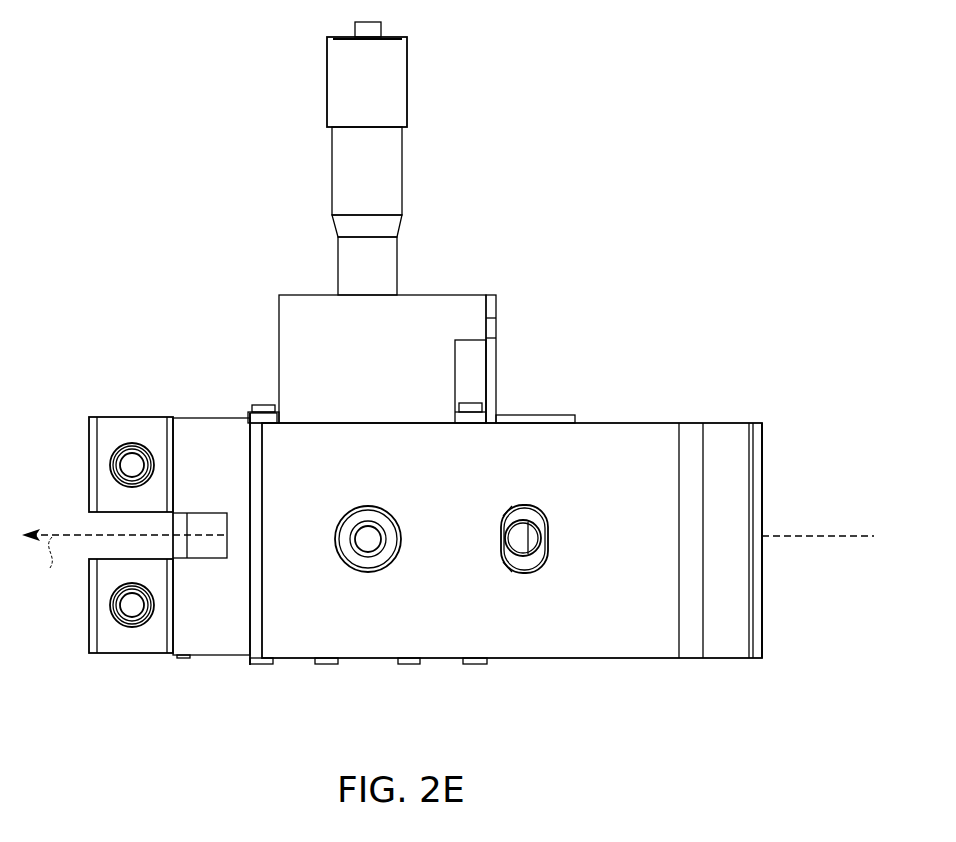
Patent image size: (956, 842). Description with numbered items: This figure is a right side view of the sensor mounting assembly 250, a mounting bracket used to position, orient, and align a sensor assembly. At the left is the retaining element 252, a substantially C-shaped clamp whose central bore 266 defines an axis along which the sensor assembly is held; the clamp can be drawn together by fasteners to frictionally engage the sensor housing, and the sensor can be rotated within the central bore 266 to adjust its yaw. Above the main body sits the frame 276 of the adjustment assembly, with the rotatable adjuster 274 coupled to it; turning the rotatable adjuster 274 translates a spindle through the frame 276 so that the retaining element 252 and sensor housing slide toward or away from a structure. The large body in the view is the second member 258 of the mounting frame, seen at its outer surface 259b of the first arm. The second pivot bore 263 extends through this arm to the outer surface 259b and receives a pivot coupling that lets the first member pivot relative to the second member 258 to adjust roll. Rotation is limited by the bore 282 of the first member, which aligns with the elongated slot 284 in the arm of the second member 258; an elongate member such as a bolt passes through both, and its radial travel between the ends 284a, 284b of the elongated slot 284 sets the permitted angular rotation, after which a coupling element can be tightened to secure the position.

The sensor mounting assembly 250 is at (713, 186).
The retaining element 252 is at (190, 410).
The second member 258 is at (590, 658).
The outer surface of the first arm 259b is at (390, 635).
The second pivot bore 263 is at (393, 505).
The central bore 266 is at (762, 475).
The rotatable adjuster 274 is at (407, 82).
The frame 276 is at (383, 371).
The bore 282 is at (527, 556).
The elongated slot 284 is at (545, 513).
The first end of the elongated slot 284a is at (520, 503).
The second end of the elongated slot 284b is at (523, 577).